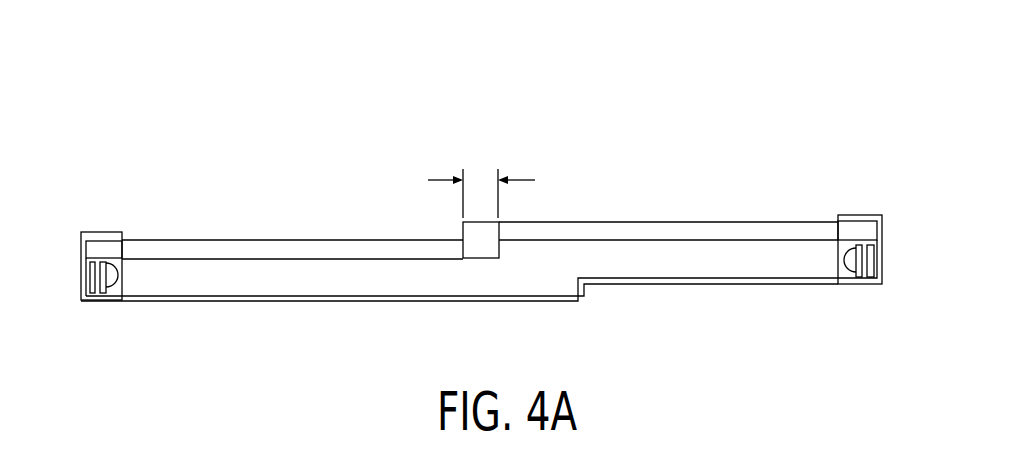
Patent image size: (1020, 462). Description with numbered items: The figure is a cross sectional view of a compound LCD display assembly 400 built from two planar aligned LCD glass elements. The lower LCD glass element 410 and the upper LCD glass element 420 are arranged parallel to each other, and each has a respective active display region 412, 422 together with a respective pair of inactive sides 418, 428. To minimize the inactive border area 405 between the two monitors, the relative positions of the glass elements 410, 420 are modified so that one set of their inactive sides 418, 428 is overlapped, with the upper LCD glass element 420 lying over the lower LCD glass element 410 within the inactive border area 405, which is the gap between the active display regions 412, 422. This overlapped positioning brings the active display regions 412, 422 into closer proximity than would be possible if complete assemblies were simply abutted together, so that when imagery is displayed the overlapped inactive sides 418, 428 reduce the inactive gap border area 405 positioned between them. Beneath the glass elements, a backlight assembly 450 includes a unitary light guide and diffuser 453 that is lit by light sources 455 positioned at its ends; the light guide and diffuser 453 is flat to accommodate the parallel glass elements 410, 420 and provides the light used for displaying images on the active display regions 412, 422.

The compound LCD display assembly 400 is at (238, 58).
The inactive border area 405 is at (527, 178).
The lower LCD glass element 410 is at (335, 240).
The active display region 412 is at (172, 247).
The inactive sides 418 is at (108, 250).
The upper LCD glass element 420 is at (748, 222).
The active display region 422 is at (656, 232).
The inactive sides 428 is at (483, 222).
The backlight assembly 450 is at (480, 268).
The light guide and diffuser 453 is at (537, 265).
The light sources 455 is at (120, 277).